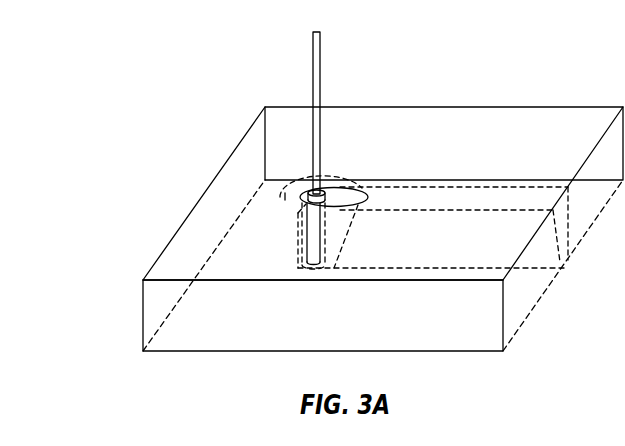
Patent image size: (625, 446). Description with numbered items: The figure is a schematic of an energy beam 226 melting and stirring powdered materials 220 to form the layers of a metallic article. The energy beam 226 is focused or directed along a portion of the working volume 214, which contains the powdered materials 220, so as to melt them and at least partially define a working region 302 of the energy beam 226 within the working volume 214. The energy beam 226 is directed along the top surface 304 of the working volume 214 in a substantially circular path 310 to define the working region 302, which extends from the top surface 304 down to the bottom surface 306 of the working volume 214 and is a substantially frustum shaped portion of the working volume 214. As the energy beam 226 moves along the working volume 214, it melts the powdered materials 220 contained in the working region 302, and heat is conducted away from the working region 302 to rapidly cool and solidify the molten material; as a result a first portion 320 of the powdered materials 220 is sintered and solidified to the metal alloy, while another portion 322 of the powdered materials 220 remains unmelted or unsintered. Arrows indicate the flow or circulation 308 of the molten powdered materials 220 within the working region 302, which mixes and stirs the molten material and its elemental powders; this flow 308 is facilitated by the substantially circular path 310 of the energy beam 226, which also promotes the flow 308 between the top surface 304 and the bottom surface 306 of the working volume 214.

The working volume 214 is at (135, 280).
The powdered materials 220 is at (180, 262).
The another portion of the powdered materials 322 is at (443, 120).
The bottom surface 306 is at (218, 352).
The top surface 304 is at (452, 278).
The first portion of the powdered materials 320 is at (483, 195).
The working region 302 is at (288, 238).
The substantially circular path 310 is at (293, 205).
The flow or circulation 308 is at (345, 191).
The energy beam 226 is at (321, 72).